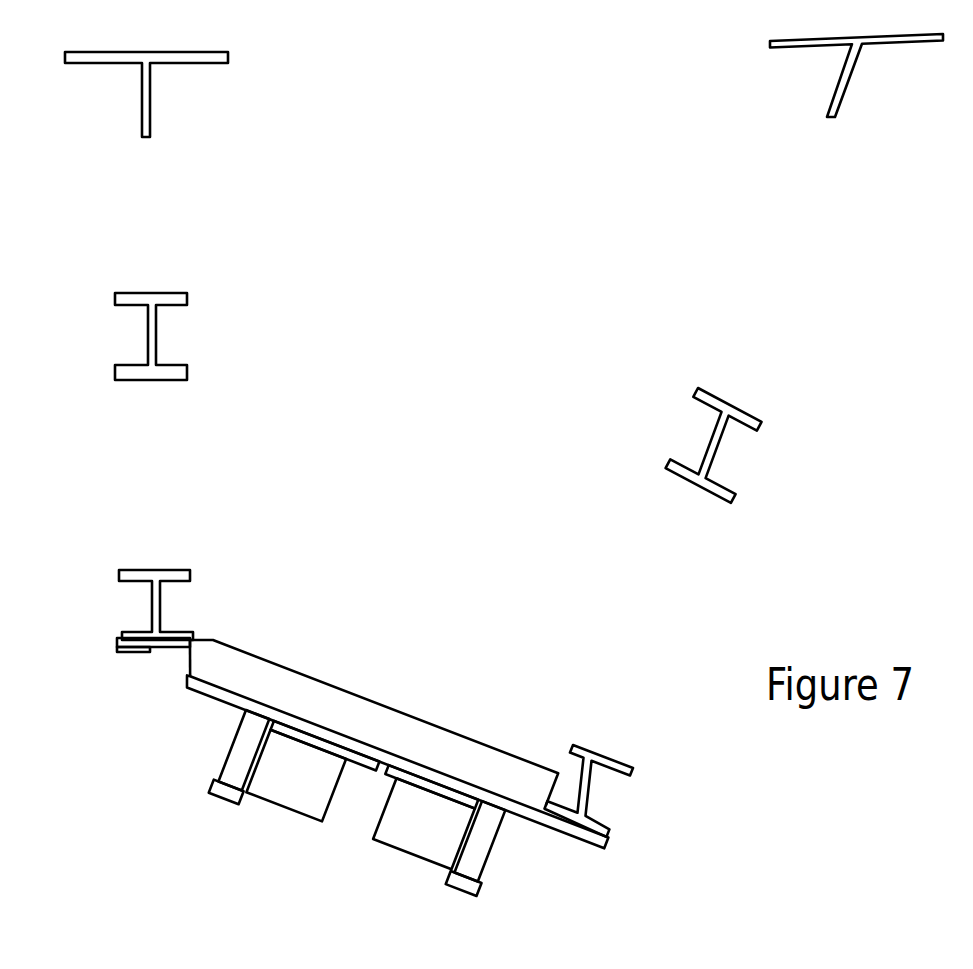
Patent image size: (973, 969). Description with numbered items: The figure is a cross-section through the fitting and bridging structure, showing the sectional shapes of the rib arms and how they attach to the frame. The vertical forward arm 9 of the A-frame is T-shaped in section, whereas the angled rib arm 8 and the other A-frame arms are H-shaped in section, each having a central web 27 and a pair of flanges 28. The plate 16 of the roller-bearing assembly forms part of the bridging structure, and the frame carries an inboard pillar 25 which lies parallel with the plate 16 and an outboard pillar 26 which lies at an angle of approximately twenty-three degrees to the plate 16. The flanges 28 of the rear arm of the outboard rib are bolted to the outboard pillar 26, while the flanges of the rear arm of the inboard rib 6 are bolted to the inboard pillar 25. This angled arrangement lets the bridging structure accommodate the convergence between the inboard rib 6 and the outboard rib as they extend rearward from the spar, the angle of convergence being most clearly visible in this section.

The inboard rib 6 is at (433, 739).
The angled rib arm 8 is at (218, 332).
The vertical forward arm 9 is at (188, 102).
The plate 16 is at (327, 733).
The inboard pillar 25 is at (563, 833).
The outboard pillar 26 is at (138, 653).
The web 27 is at (160, 597).
The flanges 28 is at (135, 634).